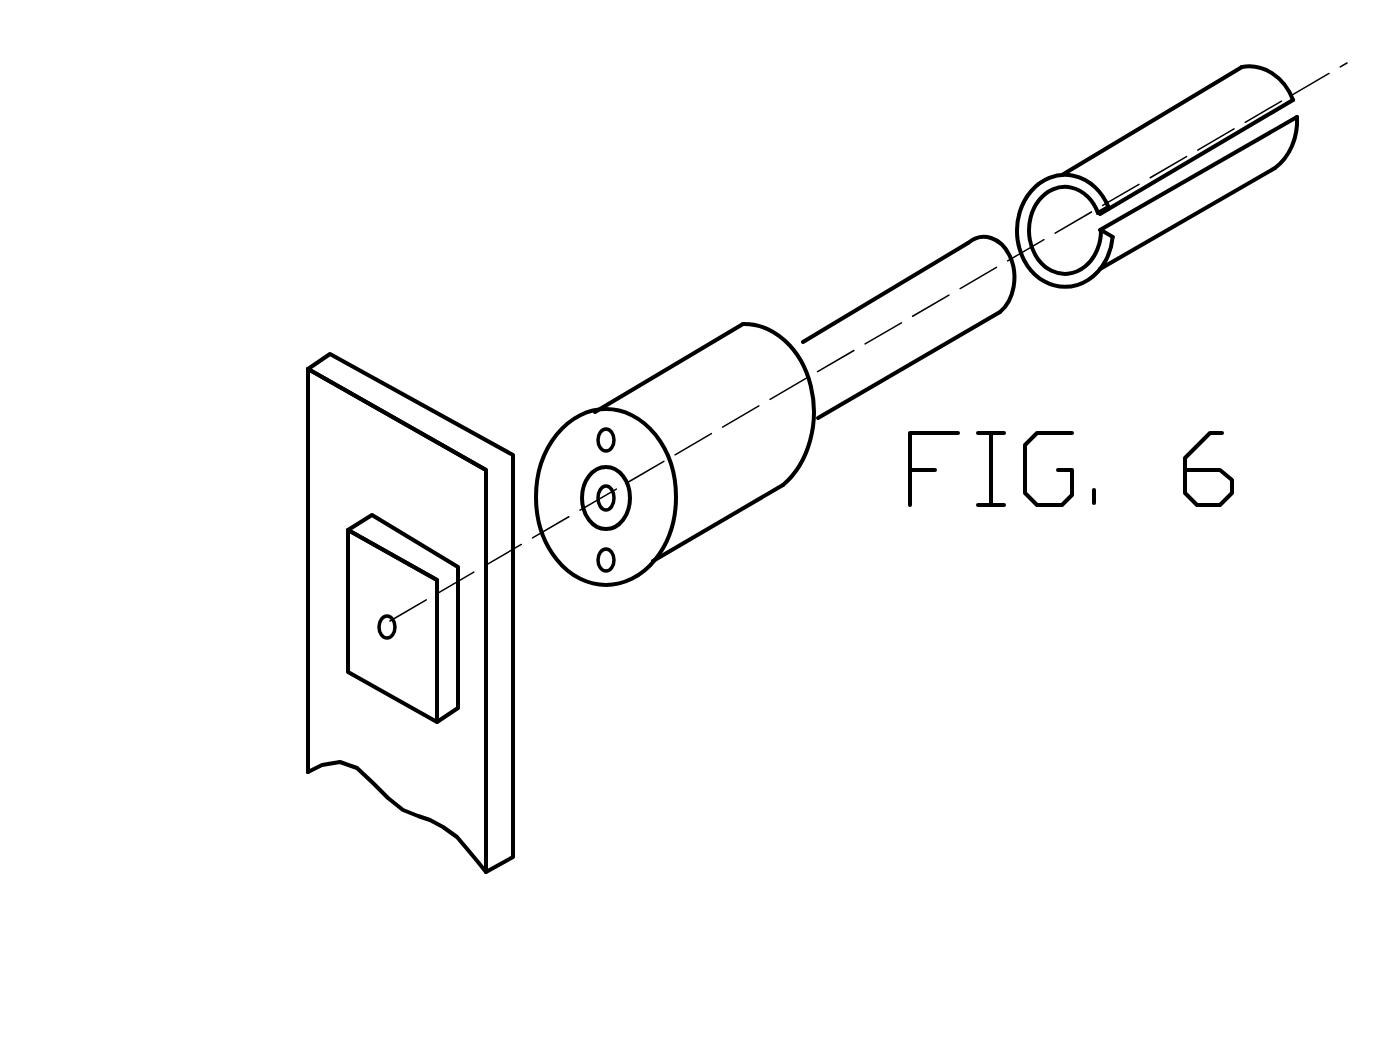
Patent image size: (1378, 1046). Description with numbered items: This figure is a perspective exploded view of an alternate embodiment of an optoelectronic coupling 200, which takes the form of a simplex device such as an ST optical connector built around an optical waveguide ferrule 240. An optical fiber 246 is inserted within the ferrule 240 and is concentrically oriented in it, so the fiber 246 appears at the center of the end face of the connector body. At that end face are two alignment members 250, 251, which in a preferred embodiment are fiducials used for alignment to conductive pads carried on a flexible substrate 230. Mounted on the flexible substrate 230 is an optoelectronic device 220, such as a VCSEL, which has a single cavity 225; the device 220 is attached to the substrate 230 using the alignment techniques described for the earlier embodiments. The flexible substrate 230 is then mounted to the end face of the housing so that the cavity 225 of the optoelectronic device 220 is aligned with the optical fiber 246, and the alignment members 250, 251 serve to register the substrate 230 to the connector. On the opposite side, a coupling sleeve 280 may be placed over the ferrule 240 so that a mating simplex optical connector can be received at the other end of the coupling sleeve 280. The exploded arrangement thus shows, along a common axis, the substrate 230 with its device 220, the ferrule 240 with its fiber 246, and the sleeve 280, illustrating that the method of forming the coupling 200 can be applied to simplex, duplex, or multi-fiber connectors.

The coupling 200 is at (780, 82).
The optoelectronic device 220 is at (378, 578).
The cavity 225 is at (385, 638).
The flexible substrate 230 is at (362, 383).
The optical waveguide ferrule 240 is at (927, 292).
The optical fiber 246 is at (787, 592).
The alignment member 250 is at (603, 438).
The alignment member 251 is at (613, 713).
The coupling sleeve 280 is at (1157, 147).